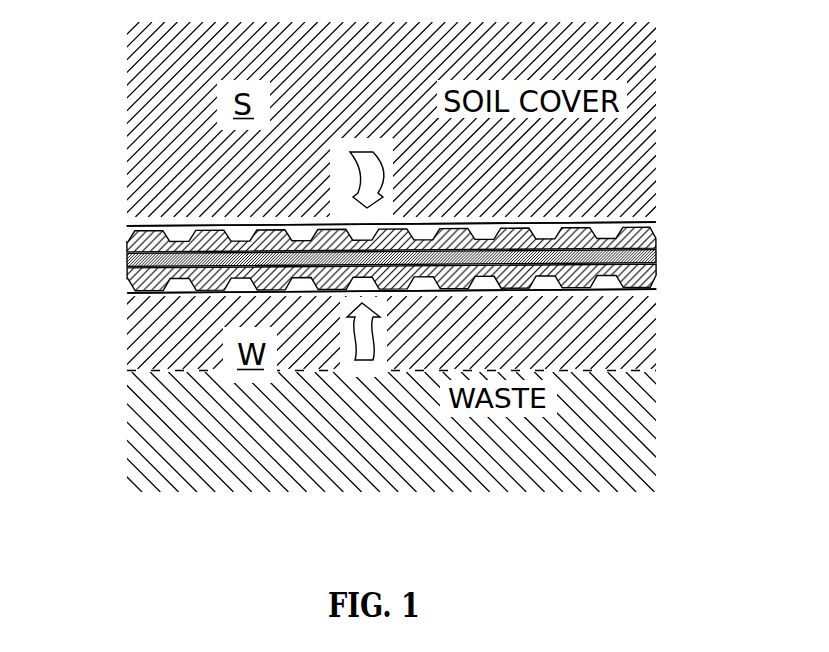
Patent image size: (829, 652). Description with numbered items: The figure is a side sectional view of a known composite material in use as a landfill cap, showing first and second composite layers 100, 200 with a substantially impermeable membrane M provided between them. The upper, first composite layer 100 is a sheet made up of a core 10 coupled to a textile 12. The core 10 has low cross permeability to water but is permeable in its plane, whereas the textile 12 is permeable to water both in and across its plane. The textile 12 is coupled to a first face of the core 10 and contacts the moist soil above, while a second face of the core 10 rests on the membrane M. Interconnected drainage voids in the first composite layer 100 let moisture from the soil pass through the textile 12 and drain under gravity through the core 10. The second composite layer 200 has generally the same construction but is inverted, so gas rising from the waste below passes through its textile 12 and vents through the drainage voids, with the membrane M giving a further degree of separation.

The textile 12 is at (130, 223).
The core 10 is at (130, 247).
The substantially impermeable membrane M is at (127, 262).
The first composite layer 100 is at (679, 216).
The second composite layer 200 is at (682, 280).